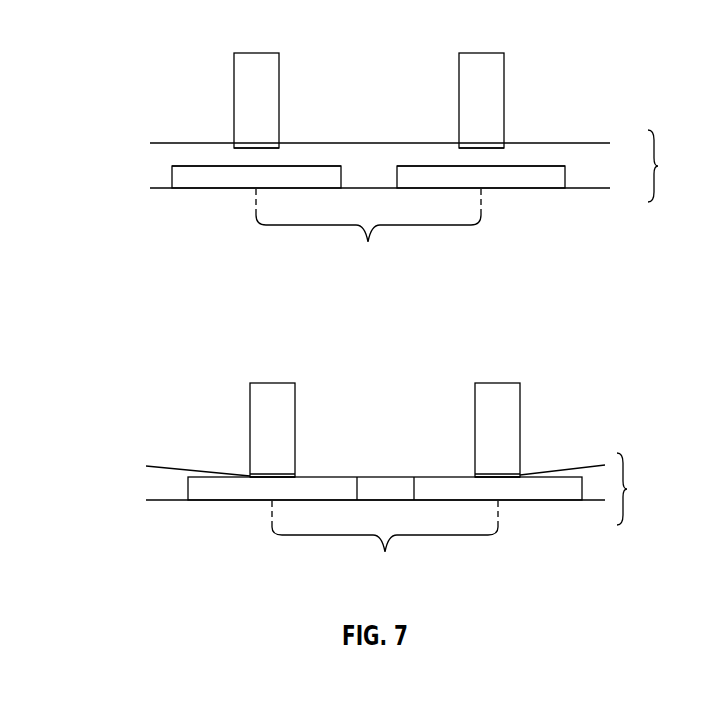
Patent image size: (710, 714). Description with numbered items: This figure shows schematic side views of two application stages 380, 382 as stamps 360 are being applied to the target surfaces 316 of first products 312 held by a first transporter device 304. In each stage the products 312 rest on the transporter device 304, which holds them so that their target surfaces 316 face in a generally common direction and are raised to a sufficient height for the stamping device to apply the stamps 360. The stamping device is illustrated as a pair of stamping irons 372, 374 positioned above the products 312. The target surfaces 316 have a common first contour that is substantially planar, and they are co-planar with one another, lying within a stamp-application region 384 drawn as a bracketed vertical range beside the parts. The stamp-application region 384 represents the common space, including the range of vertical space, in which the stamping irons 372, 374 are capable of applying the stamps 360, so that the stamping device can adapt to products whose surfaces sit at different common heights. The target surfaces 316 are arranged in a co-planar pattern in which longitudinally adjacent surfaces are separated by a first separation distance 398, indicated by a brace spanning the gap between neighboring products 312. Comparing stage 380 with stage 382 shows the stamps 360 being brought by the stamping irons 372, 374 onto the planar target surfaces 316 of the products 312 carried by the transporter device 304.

The first transporter device 304 is at (580, 189).
The first products 312 is at (172, 178).
The target surfaces 316 is at (198, 161).
The stamps 360 is at (282, 145).
The stamping iron 372 is at (257, 52).
The stamping iron 374 is at (482, 52).
The application stage 380 is at (98, 141).
The application stage 382 is at (116, 469).
The stamp-application region 384 is at (656, 327).
The first separation distance 398 is at (377, 384).